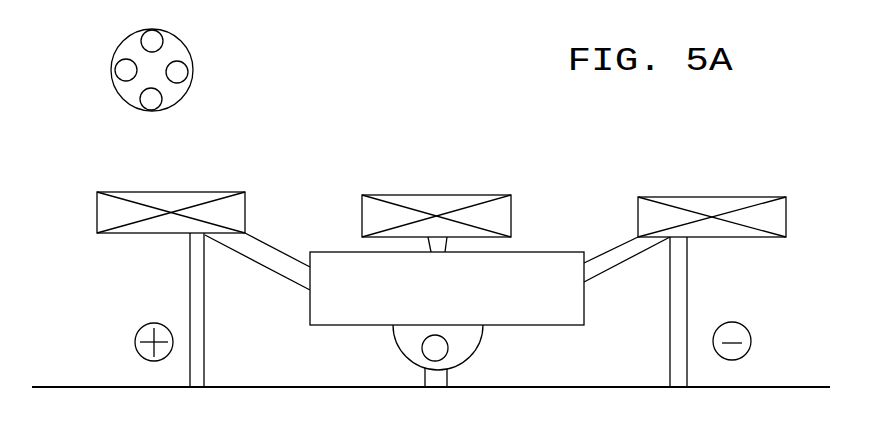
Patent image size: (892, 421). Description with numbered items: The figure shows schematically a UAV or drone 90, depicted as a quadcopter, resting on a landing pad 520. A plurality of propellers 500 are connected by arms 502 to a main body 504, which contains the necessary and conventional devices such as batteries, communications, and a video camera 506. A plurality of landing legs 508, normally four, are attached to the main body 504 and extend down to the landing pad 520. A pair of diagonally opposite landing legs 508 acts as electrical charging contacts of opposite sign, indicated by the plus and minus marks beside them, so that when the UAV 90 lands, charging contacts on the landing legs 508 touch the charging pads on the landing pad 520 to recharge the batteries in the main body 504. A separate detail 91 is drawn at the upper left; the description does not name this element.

The UAV 90 is at (436, 157).
The connector 91 is at (172, 53).
The propellers 500 is at (165, 202).
The arms 502 is at (270, 255).
The main body 504 is at (402, 281).
The video camera 506 is at (425, 348).
The landing legs 508 is at (193, 303).
The landing pad 520 is at (78, 385).